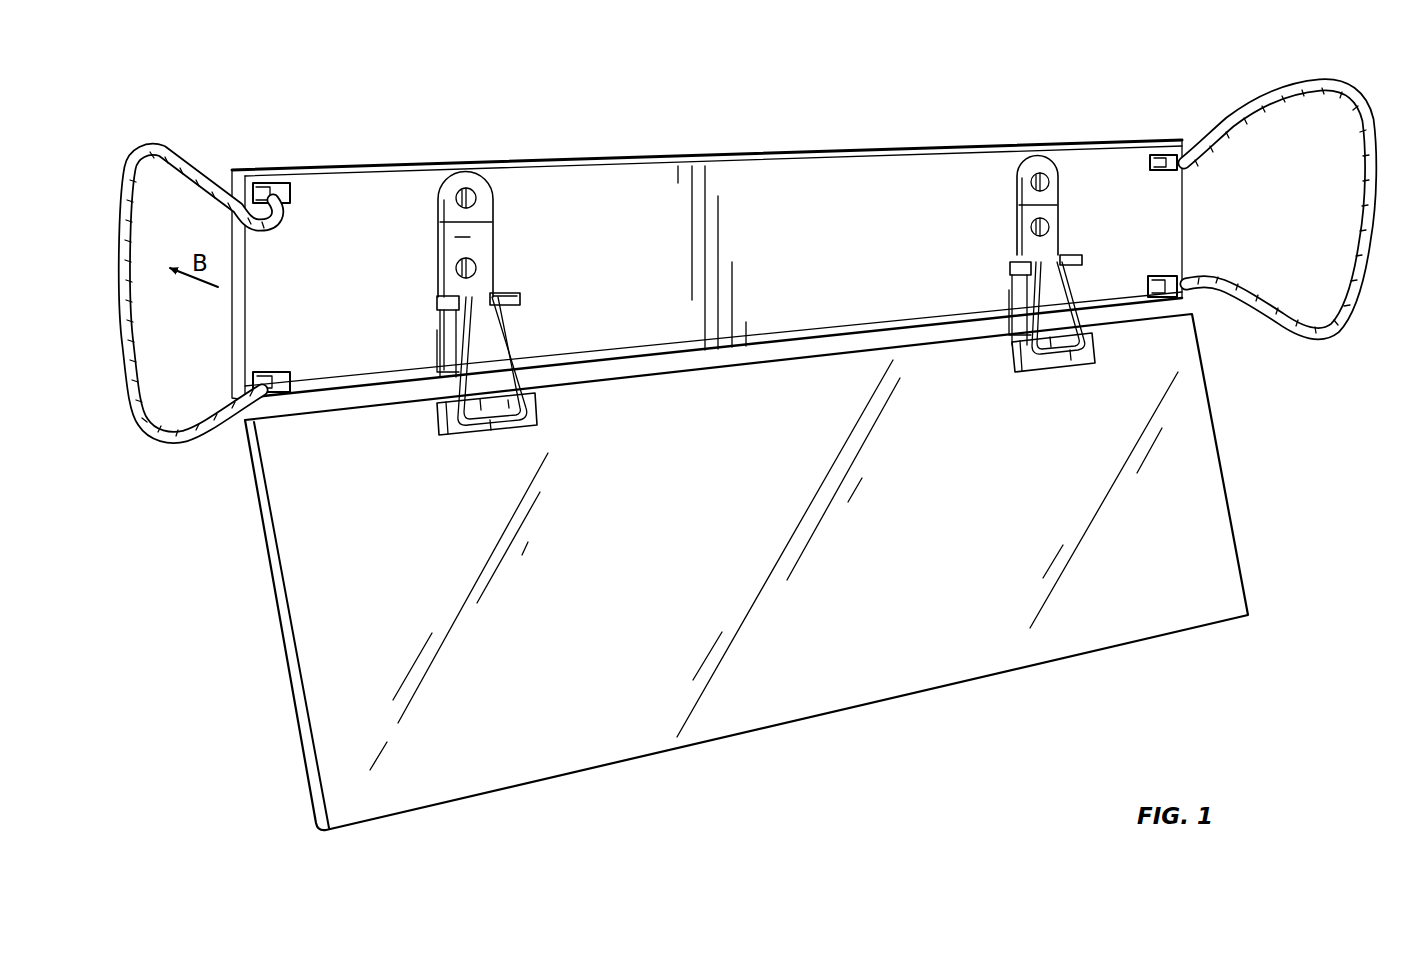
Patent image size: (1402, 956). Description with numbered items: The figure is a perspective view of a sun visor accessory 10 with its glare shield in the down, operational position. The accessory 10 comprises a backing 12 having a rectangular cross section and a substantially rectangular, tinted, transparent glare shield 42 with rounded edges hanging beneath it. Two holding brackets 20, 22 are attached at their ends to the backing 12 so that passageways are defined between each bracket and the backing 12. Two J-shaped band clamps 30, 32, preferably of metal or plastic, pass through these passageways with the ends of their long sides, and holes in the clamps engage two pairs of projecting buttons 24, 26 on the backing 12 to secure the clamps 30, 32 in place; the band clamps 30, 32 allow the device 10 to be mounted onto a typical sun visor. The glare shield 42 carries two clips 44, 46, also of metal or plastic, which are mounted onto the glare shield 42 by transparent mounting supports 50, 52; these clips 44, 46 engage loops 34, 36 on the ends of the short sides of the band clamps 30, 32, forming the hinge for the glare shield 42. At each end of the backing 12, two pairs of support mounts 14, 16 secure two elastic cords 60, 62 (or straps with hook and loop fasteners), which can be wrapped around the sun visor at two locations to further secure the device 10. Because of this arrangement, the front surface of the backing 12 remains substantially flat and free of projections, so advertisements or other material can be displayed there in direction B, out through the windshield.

The accessory 10 is at (256, 680).
The backing 12 is at (763, 157).
The support mounts 14 is at (286, 375).
The support mounts 16 is at (1177, 280).
The holding bracket 20 is at (438, 346).
The holding bracket 22 is at (1009, 291).
The projecting buttons 24 is at (478, 265).
The projecting buttons 26 is at (1031, 226).
The J-shaped band clamp 30 is at (438, 230).
The J-shaped band clamp 32 is at (1058, 193).
The loop 34 is at (521, 298).
The loop 36 is at (1082, 260).
The glare shield 42 is at (818, 720).
The clip 44 is at (508, 355).
The clip 46 is at (1074, 304).
The transparent mounting support 50 is at (538, 422).
The transparent mounting support 52 is at (1016, 360).
The elastic cord 60 is at (125, 284).
The elastic cord 62 is at (1368, 166).